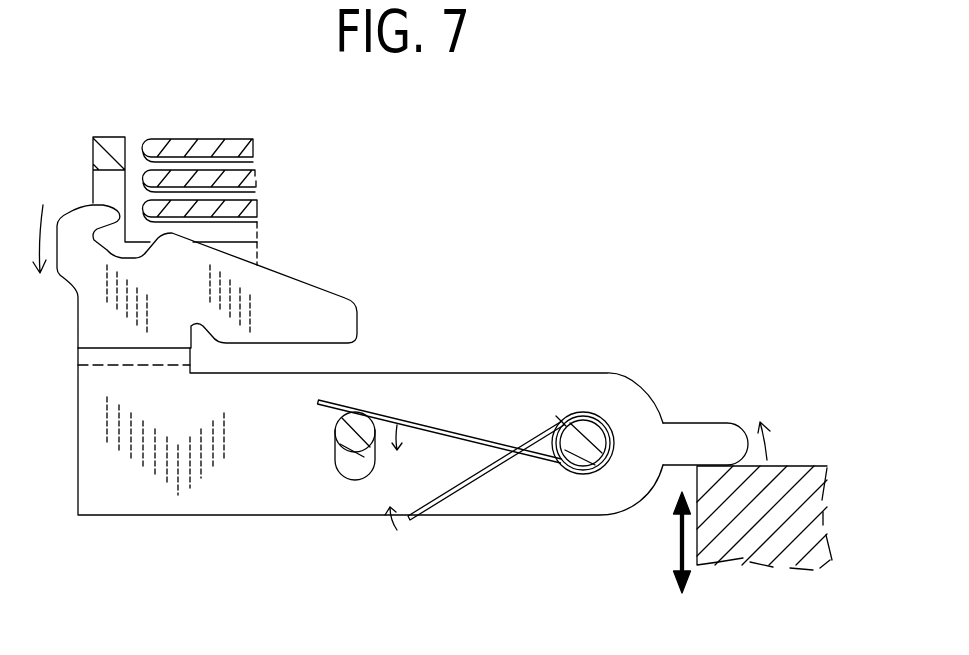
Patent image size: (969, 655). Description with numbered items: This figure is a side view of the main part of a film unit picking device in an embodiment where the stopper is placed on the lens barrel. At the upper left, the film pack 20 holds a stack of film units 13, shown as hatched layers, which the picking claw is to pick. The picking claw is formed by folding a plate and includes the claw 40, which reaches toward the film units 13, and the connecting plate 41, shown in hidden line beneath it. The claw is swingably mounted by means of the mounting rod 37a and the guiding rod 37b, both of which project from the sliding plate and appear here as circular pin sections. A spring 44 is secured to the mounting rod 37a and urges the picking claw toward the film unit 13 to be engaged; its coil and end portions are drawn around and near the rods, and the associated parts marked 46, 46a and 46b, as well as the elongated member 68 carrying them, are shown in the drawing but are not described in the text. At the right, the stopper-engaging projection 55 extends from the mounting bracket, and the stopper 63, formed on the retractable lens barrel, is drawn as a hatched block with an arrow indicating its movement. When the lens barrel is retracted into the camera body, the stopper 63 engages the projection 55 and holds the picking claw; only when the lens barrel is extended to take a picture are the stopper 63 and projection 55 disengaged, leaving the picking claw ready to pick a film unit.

The film unit 13 is at (247, 140).
The film pack 20 is at (113, 143).
The claw 40 is at (303, 313).
The connecting plate 41 is at (167, 355).
The lever body 68 is at (293, 517).
The stopper-engaging projection 55 is at (712, 435).
The stopper 63 is at (743, 550).
The spring 44 is at (443, 495).
The spring coil portion 46 is at (525, 385).
The spring end portion 46a is at (563, 420).
The spring engaging slot 46b is at (343, 470).
The mounting rod 37a is at (573, 453).
The guiding rod 37b is at (333, 428).